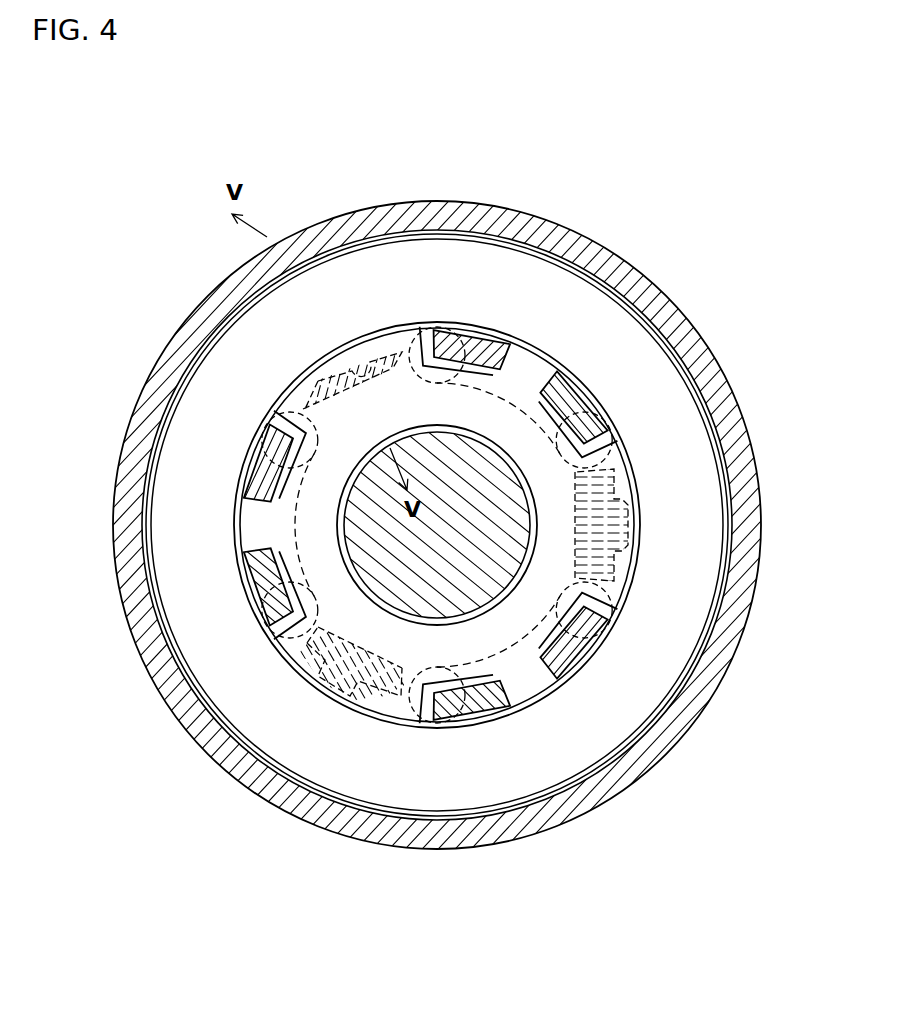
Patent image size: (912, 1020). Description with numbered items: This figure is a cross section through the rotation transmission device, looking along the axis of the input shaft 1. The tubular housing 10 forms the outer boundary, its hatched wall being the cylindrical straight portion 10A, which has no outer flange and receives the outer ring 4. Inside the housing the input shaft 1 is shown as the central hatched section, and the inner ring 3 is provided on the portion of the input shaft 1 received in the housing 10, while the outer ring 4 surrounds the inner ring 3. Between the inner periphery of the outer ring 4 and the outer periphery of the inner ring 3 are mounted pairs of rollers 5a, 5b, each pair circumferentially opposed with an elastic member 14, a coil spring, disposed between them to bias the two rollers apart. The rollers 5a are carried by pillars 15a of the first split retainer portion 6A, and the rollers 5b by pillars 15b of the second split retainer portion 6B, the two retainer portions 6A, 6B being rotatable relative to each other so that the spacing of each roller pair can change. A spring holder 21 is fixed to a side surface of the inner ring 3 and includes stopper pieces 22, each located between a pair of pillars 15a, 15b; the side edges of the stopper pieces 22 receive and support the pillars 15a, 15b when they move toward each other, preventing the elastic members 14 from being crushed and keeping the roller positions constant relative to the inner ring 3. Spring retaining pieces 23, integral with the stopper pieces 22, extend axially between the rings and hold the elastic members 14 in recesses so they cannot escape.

The input shaft 1 is at (487, 590).
The inner ring 3 is at (300, 532).
The outer ring 4 is at (660, 385).
The roller 5a is at (427, 335).
The pillar 15a is at (470, 357).
The first split retainer portion 6A is at (510, 357).
The roller 5b is at (272, 413).
The pillar 15b is at (253, 483).
The second split retainer portion 6B is at (247, 507).
The housing 10 is at (673, 748).
The cylindrical straight portion 10A is at (316, 817).
The elastic member 14 is at (318, 385).
The spring holder 21 is at (520, 392).
The stopper piece 22 is at (383, 355).
The spring retaining piece 23 is at (337, 364).